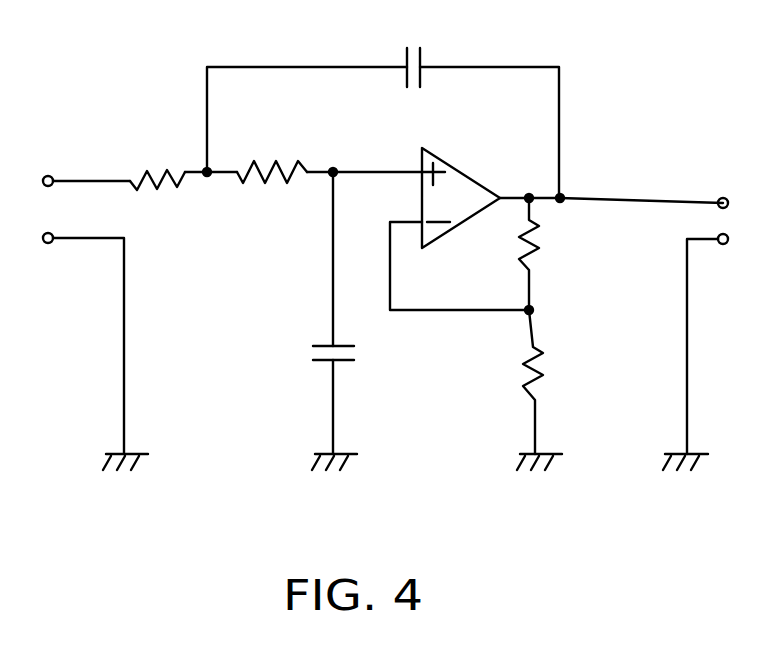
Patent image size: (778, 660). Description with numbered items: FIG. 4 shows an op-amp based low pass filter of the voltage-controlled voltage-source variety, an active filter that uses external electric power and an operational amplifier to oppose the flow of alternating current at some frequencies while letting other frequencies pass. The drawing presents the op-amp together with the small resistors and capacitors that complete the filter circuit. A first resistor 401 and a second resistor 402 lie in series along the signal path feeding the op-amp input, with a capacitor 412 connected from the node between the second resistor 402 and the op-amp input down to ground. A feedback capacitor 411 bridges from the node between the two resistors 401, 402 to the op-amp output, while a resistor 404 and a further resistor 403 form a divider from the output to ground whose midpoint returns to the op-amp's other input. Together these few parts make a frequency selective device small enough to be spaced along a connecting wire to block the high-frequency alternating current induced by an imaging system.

The input resistor 401 is at (168, 160).
The series resistor 402 is at (304, 157).
The feedback capacitor 411 is at (427, 53).
The shunt capacitor 412 is at (327, 335).
The feedback resistor 404 is at (605, 238).
The gain-setting resistor 403 is at (610, 338).